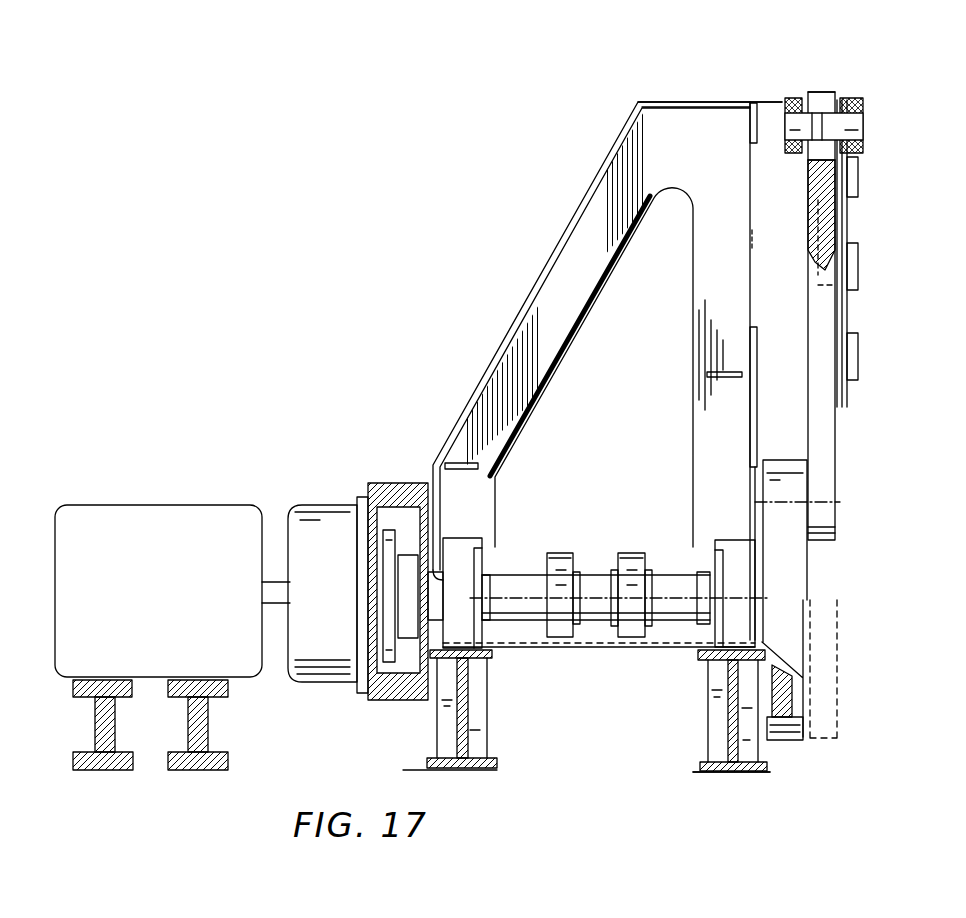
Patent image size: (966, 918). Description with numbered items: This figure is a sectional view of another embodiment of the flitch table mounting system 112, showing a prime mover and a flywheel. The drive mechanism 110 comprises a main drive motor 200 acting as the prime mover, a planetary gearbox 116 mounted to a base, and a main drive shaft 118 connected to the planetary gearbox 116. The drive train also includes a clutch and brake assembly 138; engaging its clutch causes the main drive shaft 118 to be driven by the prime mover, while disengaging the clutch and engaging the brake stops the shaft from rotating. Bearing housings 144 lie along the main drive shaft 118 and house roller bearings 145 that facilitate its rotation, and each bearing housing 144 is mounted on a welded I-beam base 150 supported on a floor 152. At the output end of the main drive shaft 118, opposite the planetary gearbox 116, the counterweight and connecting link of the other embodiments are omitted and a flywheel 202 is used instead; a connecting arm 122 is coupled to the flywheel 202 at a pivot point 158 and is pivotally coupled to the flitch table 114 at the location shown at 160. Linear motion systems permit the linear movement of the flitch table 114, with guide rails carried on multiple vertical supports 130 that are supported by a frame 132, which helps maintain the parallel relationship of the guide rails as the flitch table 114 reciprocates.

The drive mechanism 110 is at (370, 438).
The flitch table mounting system 112 is at (529, 170).
The flitch table 114 is at (876, 255).
The planetary gearbox 116 is at (345, 497).
The main drive shaft 118 is at (592, 583).
The connecting arm 122 is at (818, 312).
The vertical supports 130 is at (772, 158).
The frame 132 is at (563, 300).
The clutch and brake assembly 138 is at (409, 463).
The bearing housings 144 is at (465, 545).
The roller bearings 145 is at (523, 583).
The welded I-beam base 150 is at (97, 731).
The floor 152 is at (772, 780).
The pivot point 158 is at (820, 512).
The pivotal coupling 160 is at (840, 127).
The main drive motor 200 is at (147, 527).
The flywheel 202 is at (793, 585).